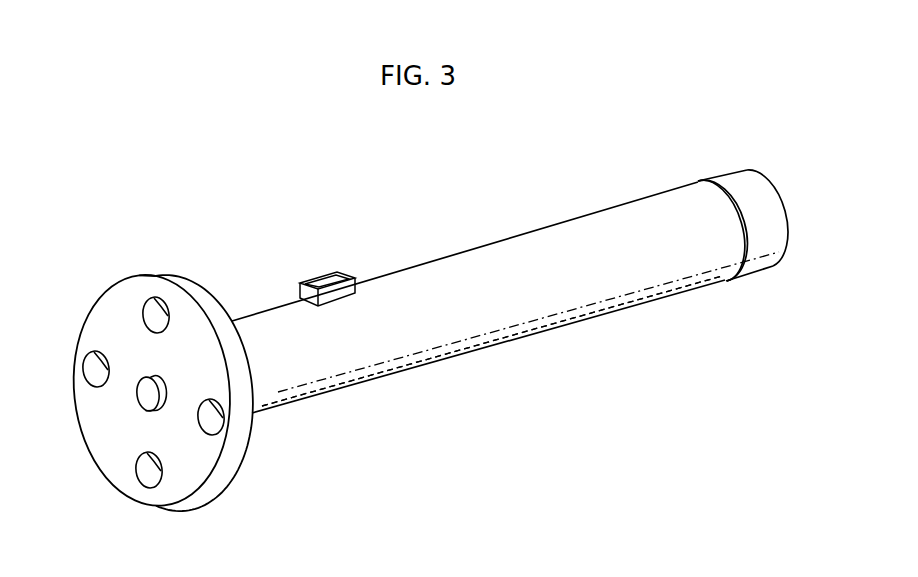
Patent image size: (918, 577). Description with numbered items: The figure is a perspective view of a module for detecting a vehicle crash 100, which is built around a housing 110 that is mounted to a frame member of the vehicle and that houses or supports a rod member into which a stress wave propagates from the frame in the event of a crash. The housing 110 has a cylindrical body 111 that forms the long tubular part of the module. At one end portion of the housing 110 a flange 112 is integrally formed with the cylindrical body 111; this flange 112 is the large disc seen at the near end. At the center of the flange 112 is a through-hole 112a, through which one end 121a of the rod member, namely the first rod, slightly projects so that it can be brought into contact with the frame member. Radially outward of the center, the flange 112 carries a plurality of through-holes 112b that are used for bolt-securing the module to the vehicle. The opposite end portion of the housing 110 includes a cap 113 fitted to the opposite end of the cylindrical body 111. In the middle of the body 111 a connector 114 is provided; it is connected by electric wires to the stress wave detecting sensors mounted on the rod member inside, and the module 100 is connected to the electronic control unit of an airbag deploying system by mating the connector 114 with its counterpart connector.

The module for detecting a vehicle crash 100 is at (196, 205).
The housing 110 is at (585, 198).
The cylindrical body 111 is at (545, 308).
The flange 112 is at (247, 463).
The through-hole 112a is at (160, 412).
The through-holes 112b is at (150, 472).
The cap 113 is at (758, 180).
The connector 114 is at (328, 271).
The one end of the first rod 121a is at (141, 397).